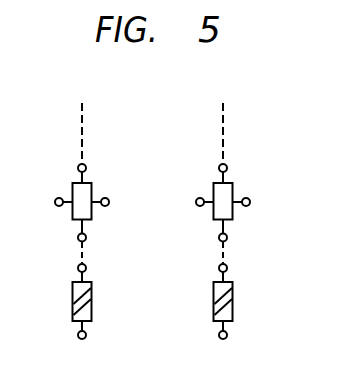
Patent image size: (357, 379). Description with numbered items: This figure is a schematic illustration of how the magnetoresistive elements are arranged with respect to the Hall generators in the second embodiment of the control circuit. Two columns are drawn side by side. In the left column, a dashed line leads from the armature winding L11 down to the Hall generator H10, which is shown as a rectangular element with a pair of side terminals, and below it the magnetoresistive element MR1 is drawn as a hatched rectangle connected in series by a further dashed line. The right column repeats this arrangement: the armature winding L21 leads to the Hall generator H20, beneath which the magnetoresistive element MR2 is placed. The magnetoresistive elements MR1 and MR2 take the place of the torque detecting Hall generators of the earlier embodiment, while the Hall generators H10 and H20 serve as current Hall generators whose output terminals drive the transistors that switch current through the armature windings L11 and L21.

The armature winding L11 is at (78, 123).
The armature winding L21 is at (221, 123).
The Hall generator H10 is at (92, 190).
The Hall generator H20 is at (233, 190).
The magnetoresistive element MR1 is at (92, 292).
The magnetoresistive element MR2 is at (233, 292).